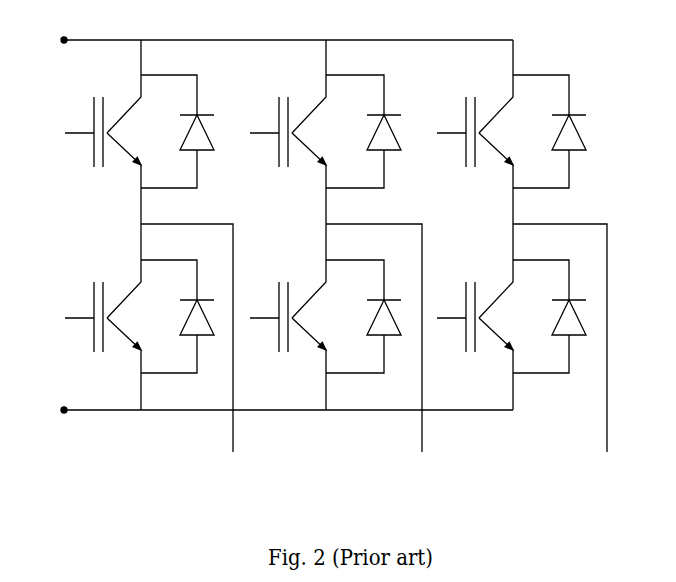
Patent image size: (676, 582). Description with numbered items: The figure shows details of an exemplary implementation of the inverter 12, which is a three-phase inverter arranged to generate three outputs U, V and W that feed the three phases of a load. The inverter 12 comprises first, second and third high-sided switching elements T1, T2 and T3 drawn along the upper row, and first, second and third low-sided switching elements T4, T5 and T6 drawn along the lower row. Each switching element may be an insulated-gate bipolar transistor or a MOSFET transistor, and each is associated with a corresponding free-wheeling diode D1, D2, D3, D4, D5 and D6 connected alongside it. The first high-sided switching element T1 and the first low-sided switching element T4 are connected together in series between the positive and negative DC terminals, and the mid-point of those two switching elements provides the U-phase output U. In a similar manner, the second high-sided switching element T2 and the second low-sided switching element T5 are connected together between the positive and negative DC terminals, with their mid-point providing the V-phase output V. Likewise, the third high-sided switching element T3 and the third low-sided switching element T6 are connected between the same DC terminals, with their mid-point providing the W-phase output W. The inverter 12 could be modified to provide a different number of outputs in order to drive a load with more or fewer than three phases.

The inverter 12 is at (90, 462).
The first high-sided switching element T1 is at (103, 132).
The second high-sided switching element T2 is at (288, 132).
The third high-sided switching element T3 is at (475, 132).
The first low-sided switching element T4 is at (103, 317).
The second low-sided switching element T5 is at (288, 317).
The third low-sided switching element T6 is at (475, 317).
The free-wheeling diode D1 is at (177, 120).
The free-wheeling diode D2 is at (363, 120).
The free-wheeling diode D3 is at (549, 120).
The free-wheeling diode D4 is at (177, 306).
The free-wheeling diode D5 is at (363, 307).
The free-wheeling diode D6 is at (549, 308).
The U-phase output U is at (189, 349).
The V-phase output V is at (376, 349).
The W-phase output W is at (563, 349).